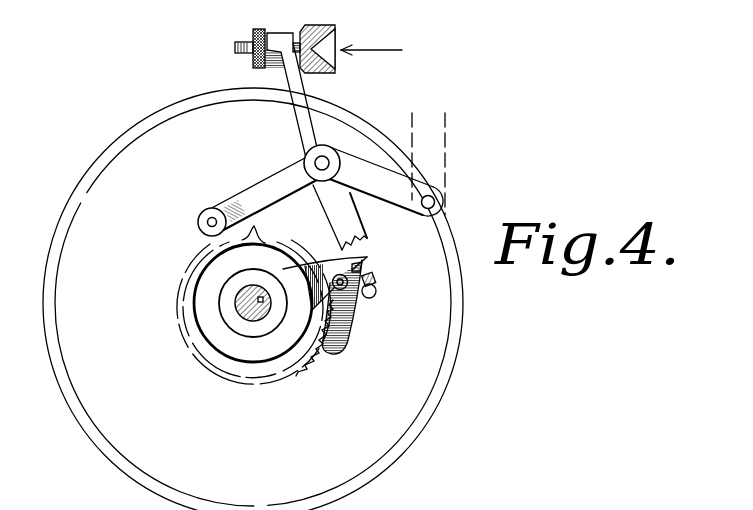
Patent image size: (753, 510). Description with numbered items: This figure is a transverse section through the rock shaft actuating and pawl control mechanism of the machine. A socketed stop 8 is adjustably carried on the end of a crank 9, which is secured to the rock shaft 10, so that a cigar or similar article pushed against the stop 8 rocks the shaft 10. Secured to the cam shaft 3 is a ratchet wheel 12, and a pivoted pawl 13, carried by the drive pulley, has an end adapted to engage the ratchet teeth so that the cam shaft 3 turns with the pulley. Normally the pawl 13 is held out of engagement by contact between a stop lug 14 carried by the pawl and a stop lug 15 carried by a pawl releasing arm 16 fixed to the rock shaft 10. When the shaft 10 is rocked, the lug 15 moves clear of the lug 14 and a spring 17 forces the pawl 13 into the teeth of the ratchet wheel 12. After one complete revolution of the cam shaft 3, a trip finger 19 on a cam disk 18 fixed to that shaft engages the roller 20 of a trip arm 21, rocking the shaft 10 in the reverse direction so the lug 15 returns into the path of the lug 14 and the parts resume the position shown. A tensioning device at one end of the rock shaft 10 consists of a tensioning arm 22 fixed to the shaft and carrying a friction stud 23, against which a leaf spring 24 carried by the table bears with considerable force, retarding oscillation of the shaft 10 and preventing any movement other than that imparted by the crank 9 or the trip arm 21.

The cam shaft 3 is at (248, 305).
The socketed stop 8 is at (311, 31).
The crank 9 is at (292, 79).
The rock shaft 10 is at (322, 163).
The ratchet wheel 12 is at (315, 362).
The pivoted pawl 13 is at (348, 335).
The stop lug 14 is at (357, 268).
The stop lug 15 is at (380, 290).
The pawl releasing arm 16 is at (337, 207).
The spring 17 is at (372, 244).
The cam disk 18 is at (205, 289).
The trip finger 19 is at (251, 246).
The roller 20 is at (198, 219).
The trip arm 21 is at (272, 180).
The tensioning arm 22 is at (353, 172).
The friction stud 23 is at (435, 205).
The leaf spring 24 is at (437, 162).